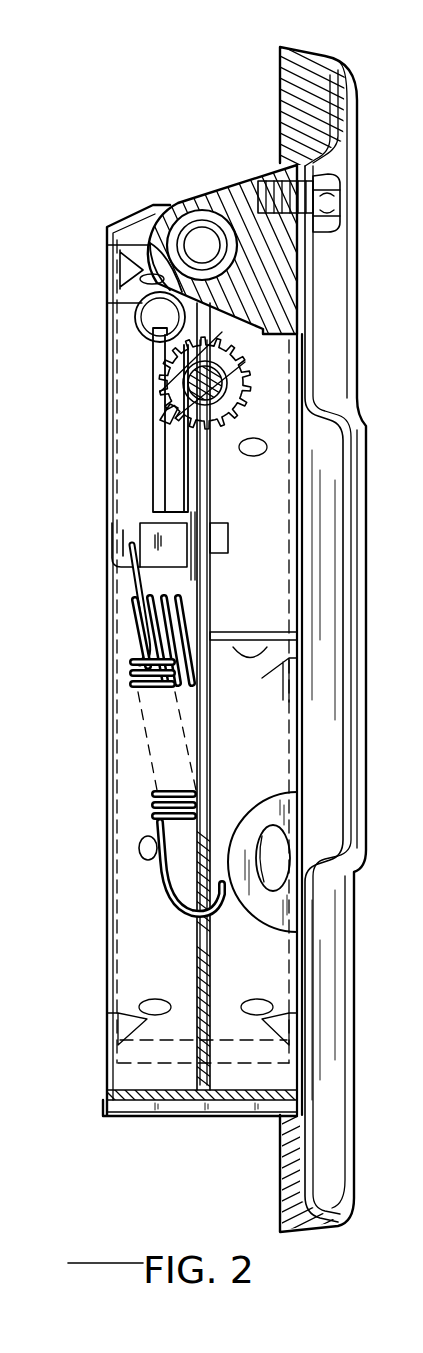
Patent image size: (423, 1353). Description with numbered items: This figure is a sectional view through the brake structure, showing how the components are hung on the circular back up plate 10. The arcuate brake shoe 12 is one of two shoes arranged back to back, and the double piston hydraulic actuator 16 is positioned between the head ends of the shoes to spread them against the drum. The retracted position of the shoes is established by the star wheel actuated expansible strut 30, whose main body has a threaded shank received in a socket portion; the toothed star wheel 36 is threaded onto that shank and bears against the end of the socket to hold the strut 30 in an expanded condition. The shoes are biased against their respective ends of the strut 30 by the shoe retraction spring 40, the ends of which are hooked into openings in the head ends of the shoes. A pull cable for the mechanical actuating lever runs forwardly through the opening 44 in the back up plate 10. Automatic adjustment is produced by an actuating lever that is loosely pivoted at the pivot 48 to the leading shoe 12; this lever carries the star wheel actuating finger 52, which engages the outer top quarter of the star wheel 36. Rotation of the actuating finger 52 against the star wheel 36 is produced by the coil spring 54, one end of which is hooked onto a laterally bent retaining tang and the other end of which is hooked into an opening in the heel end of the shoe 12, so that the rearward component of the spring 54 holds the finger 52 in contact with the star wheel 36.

The back up plate 10 is at (322, 52).
The brake shoe 12 is at (107, 877).
The double piston hydraulic actuator 16 is at (200, 200).
The expansible strut 30 is at (178, 396).
The star wheel 36 is at (153, 381).
The shoe retraction spring 40 is at (152, 248).
The opening 44 is at (268, 835).
The pivot 48 is at (152, 409).
The star wheel actuating finger 52 is at (192, 316).
The coil spring 54 is at (130, 676).